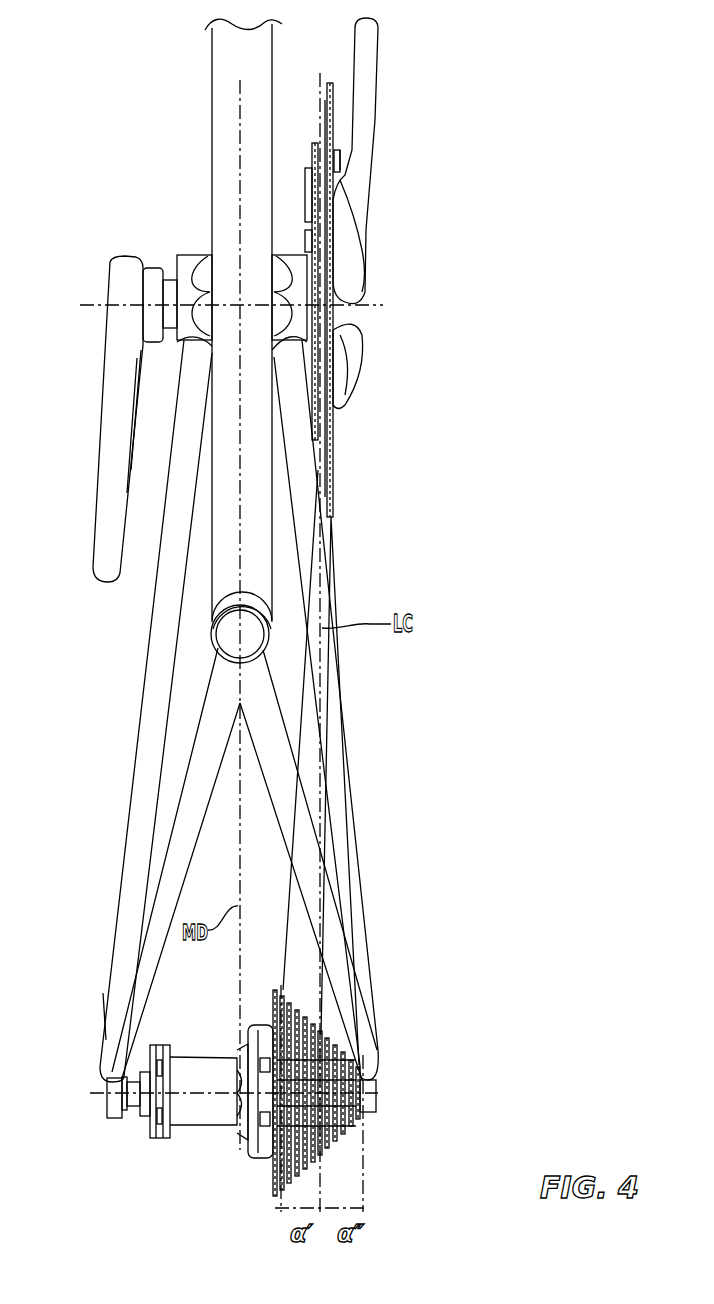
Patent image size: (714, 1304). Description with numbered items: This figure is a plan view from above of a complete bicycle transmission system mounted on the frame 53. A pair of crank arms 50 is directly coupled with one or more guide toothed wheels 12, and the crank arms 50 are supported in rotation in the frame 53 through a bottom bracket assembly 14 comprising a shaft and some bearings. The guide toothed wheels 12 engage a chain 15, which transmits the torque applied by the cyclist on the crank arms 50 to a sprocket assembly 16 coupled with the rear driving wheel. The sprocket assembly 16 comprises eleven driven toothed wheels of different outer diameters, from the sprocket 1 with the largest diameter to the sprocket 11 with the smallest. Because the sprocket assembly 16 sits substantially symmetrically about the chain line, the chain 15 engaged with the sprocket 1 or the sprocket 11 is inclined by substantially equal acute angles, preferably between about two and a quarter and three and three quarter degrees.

The sprocket 1 is at (278, 1000).
The sprocket 11 is at (361, 1128).
The guide toothed wheel 12 is at (333, 422).
The bottom bracket assembly 14 is at (419, 266).
The chain 15 is at (350, 888).
The sprocket assembly 16 is at (237, 1178).
The crank arm 50 is at (362, 120).
The frame 53 is at (157, 900).